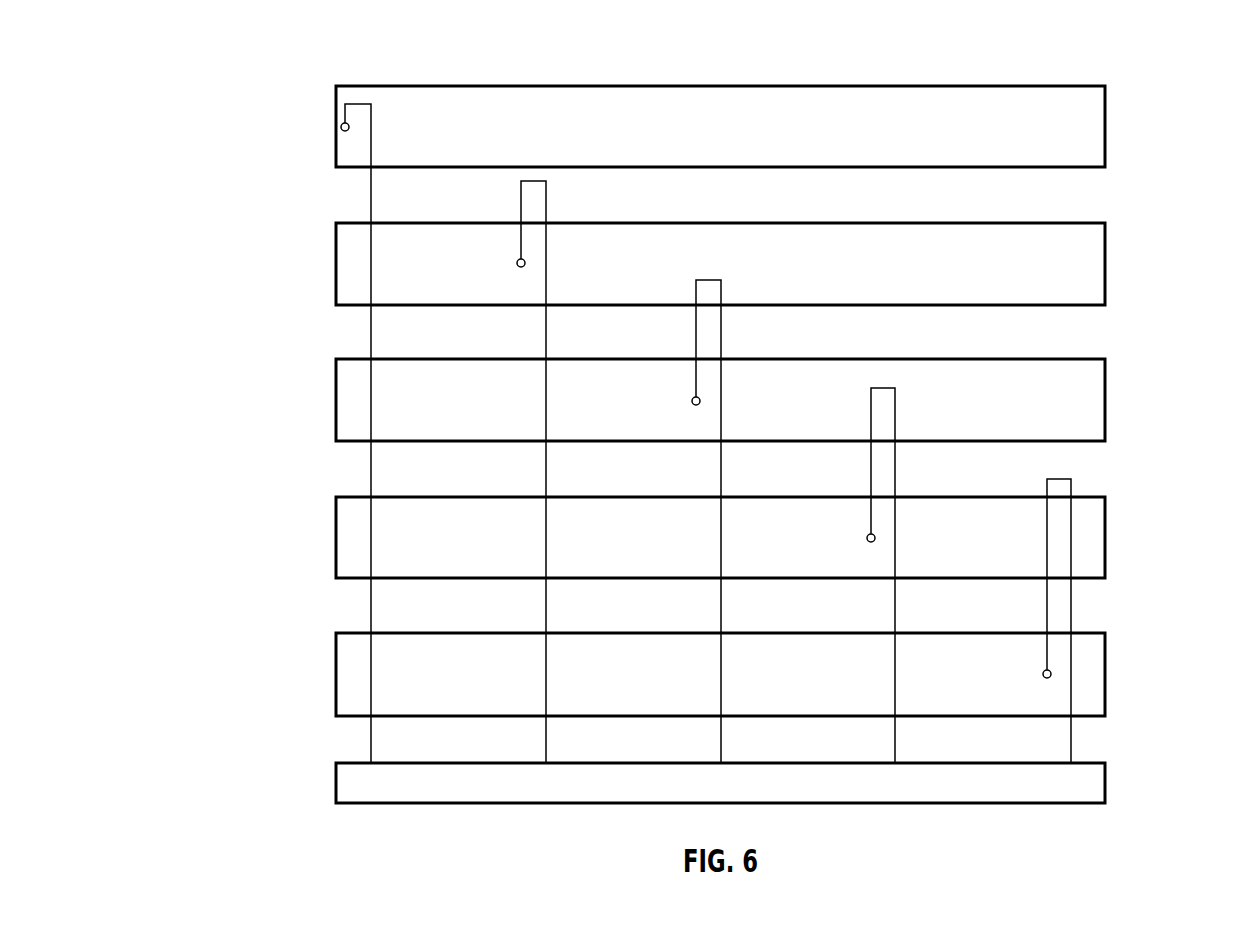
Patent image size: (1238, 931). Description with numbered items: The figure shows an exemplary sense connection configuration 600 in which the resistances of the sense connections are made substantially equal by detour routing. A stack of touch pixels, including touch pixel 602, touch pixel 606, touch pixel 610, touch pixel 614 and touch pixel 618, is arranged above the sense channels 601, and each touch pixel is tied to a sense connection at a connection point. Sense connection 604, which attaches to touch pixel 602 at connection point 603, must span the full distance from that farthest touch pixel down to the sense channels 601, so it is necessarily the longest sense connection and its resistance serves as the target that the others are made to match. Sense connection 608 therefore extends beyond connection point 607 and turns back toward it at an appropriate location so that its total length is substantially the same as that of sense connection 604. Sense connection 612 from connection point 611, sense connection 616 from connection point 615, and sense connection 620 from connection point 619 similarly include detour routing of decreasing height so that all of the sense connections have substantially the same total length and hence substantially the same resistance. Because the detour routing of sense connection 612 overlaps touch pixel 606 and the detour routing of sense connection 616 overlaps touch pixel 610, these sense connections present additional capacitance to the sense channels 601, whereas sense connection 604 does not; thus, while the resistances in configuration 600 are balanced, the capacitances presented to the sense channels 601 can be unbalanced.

The sense connection configuration 600 is at (202, 54).
The sense channels 601 is at (1107, 781).
The touch pixel 602 is at (1107, 128).
The first contact / node 603 is at (341, 125).
The sense connection 604 is at (370, 205).
The touch pixel 606 is at (1107, 266).
The connection point 607 is at (518, 261).
The sense connection 608 is at (544, 341).
The touch pixel 610 is at (1107, 402).
The third contact / node 611 is at (693, 399).
The sense connection 612 is at (719, 478).
The fourth conductive layer 614 is at (1107, 538).
The fourth contact / node 615 is at (868, 536).
The sense connection 616 is at (893, 621).
The fifth conductive layer 618 is at (1107, 676).
The fifth contact / node 619 is at (1044, 672).
The fifth vertical conductor 620 is at (1069, 753).